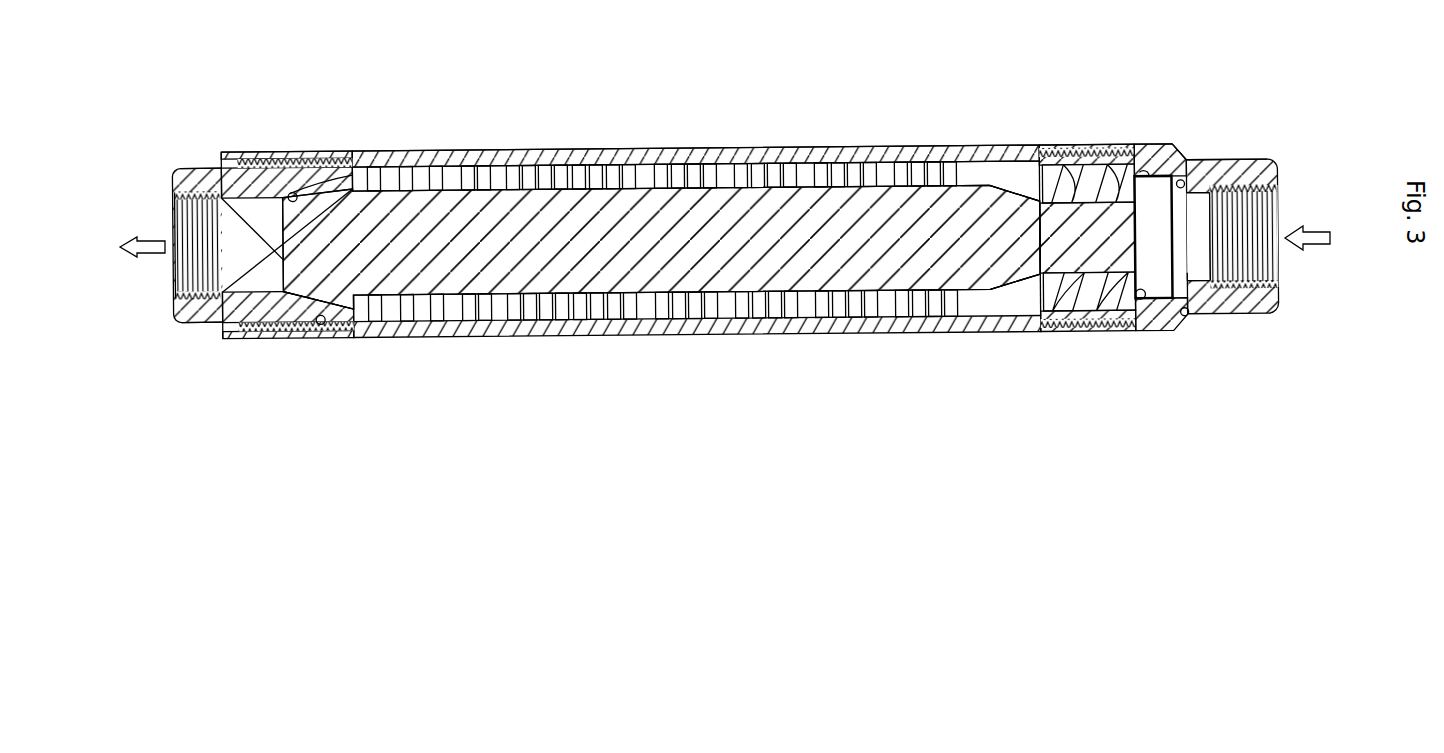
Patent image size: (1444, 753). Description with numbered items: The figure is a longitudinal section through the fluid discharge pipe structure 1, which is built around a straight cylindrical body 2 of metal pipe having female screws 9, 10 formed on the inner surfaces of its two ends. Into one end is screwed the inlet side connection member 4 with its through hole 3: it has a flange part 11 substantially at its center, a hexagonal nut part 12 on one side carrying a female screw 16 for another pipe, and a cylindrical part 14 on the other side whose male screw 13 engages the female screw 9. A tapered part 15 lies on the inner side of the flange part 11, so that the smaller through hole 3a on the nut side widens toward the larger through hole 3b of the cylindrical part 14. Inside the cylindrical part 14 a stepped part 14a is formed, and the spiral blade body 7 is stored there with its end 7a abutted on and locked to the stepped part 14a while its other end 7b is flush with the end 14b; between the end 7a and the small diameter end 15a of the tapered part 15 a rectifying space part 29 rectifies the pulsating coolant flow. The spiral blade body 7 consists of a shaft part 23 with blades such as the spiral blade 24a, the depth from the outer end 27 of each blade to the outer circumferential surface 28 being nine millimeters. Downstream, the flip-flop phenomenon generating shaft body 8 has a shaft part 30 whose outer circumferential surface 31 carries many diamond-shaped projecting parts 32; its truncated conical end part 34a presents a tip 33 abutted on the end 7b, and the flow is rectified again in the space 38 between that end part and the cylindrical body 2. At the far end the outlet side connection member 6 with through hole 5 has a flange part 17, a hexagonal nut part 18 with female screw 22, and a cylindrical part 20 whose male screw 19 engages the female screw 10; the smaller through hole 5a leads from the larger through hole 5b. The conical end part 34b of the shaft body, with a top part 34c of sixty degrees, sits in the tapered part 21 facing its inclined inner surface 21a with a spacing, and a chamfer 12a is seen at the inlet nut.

The fluid discharge pipe structure 1 is at (653, 118).
The cylindrical body 2 is at (708, 155).
The through hole 3 is at (1202, 260).
The through hole on the nut part side 3a is at (1203, 282).
The through hole of the cylindrical part 3b is at (1135, 170).
The inlet side connection member 4 is at (1180, 280).
The through hole 5 is at (243, 242).
The through hole on the nut part side 5a is at (182, 190).
The through hole of the cylindrical part 5b is at (298, 288).
The outlet side connection member 6 is at (253, 320).
The spiral blade body 7 is at (1087, 267).
The end of the spiral blade body 7a is at (1138, 213).
The end of the spiral blade body 7b is at (1048, 273).
The flip-flop phenomenon generating shaft body 8 is at (847, 282).
The female screw 9 is at (1112, 317).
The female screw 10 is at (328, 323).
The flange part 11 is at (1163, 145).
The hexagonal nut part 12 is at (1266, 158).
The chamfer 12a is at (1210, 165).
The male screw 13 is at (1137, 303).
The cylindrical part 14 is at (1103, 162).
The stepped part 14a is at (1147, 293).
The end of the cylindrical part 14b is at (1035, 310).
The tapered part 15 is at (1193, 186).
The small diameter end of the tapered part 15a is at (1188, 318).
The female screw 16 is at (1267, 198).
The flange part 17 is at (223, 155).
The hexagonal nut part 18 is at (182, 322).
The male screw 19 is at (287, 158).
The cylindrical part 20 is at (328, 173).
The tapered part 21 is at (291, 193).
The inclined inner surface 21a is at (357, 190).
The female screw 22 is at (182, 273).
The shaft part 23 is at (1040, 200).
The spiral blade 24a is at (1063, 203).
The outer end of the blade 27 is at (1055, 207).
The outer circumferential surface of the shaft part 28 is at (1073, 193).
The rectifying space part 29 is at (1159, 272).
The shaft part 30 is at (535, 223).
The outer circumferential surface 31 is at (595, 163).
The diamond-shaped projecting parts 32 is at (503, 180).
The tip 33 is at (1040, 250).
The one end part 34a is at (983, 202).
The another end part 34b is at (250, 287).
The top part 34c is at (267, 245).
The space 38 is at (997, 173).